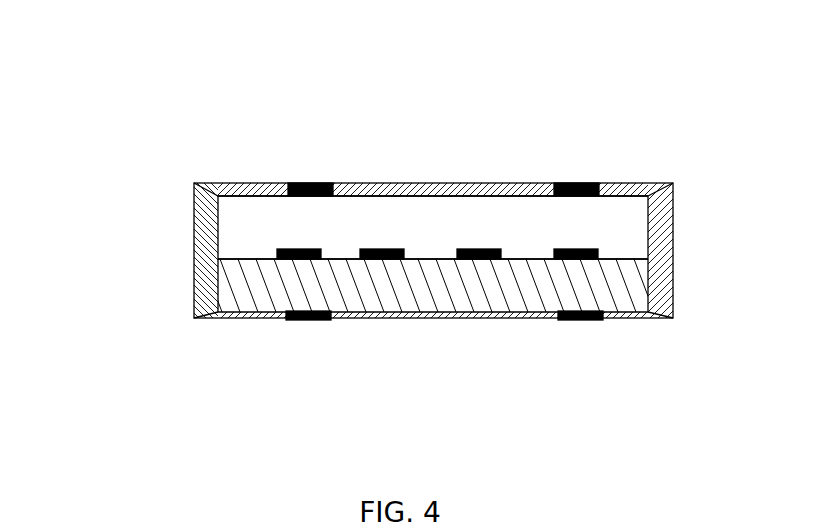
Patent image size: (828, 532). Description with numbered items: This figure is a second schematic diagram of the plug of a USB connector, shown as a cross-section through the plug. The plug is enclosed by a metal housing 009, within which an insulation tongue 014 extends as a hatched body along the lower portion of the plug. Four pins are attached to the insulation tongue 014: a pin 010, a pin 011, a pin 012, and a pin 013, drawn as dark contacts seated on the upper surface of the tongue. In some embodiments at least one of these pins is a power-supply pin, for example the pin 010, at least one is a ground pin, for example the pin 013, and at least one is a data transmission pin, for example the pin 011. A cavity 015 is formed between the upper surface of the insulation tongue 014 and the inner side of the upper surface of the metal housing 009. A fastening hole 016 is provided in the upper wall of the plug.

The metal housing 009 is at (194, 240).
The pin 010 is at (277, 259).
The pin 011 is at (380, 259).
The pin 012 is at (478, 259).
The pin 013 is at (557, 259).
The insulation tongue 014 is at (423, 296).
The cavity 015 is at (428, 221).
The fastening hole 016 is at (575, 183).